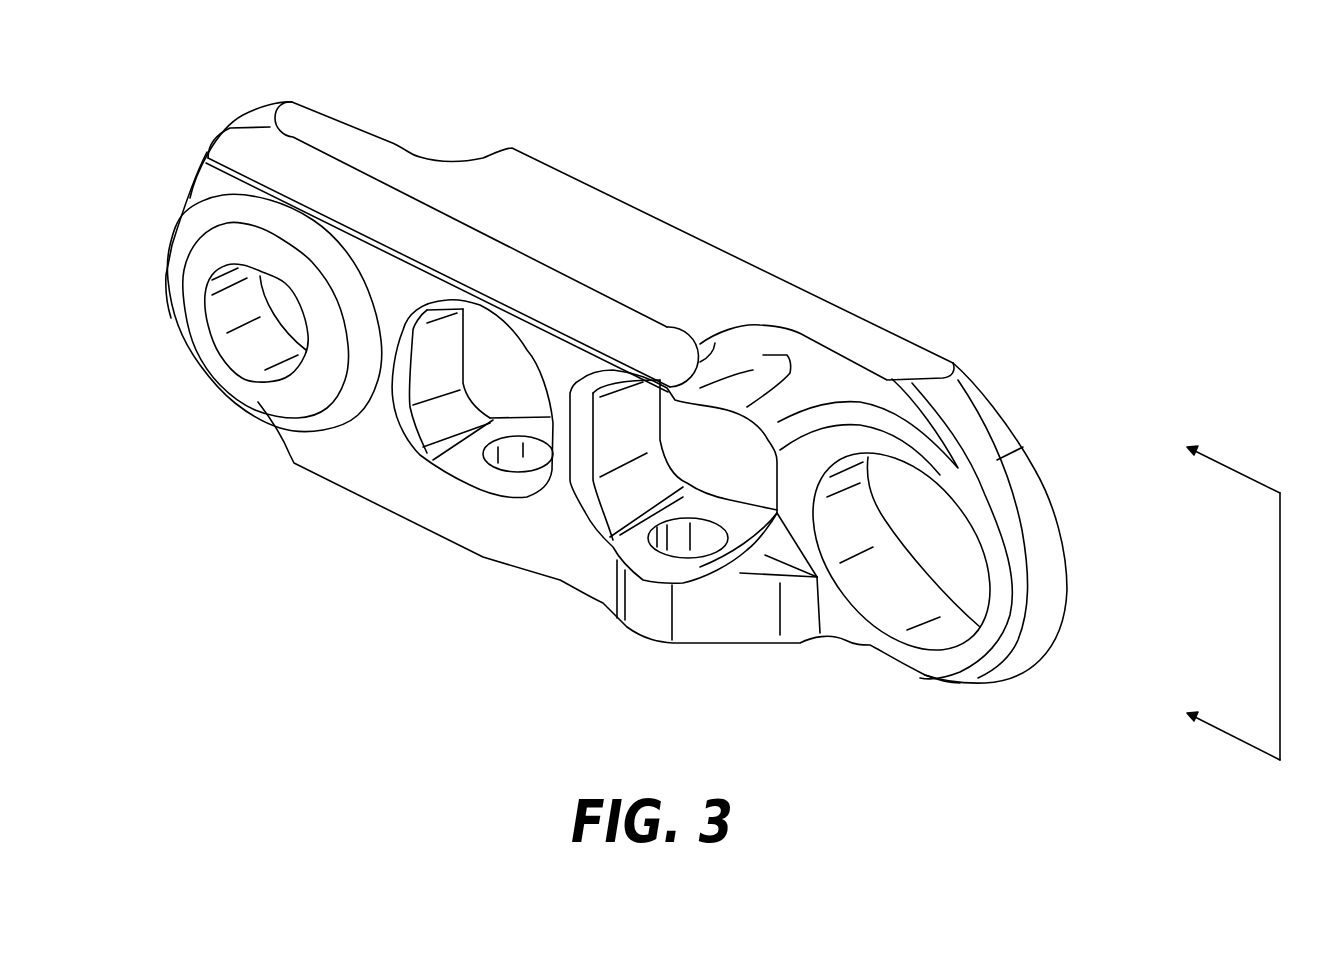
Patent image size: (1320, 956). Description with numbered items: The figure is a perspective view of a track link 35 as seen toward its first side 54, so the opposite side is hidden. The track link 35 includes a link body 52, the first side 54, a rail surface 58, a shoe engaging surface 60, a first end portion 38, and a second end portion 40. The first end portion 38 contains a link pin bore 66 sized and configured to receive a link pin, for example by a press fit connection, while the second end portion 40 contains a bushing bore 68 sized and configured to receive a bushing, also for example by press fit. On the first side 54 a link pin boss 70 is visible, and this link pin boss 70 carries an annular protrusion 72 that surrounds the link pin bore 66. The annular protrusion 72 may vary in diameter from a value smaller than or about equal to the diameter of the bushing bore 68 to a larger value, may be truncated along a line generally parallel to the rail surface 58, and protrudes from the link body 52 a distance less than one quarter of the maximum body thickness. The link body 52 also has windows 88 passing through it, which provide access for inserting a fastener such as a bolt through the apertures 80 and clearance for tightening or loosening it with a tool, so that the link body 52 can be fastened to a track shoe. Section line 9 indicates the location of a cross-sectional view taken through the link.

The section line 9- 9 is at (1245, 612).
The track link 35 is at (675, 141).
The first end portion 38 is at (197, 78).
The second end portion 40 is at (1087, 608).
The link body 52 is at (572, 555).
The first side 54 is at (414, 497).
The rail surface 58 is at (673, 230).
The shoe engaging surface 60 is at (480, 557).
The link pin bore 66 is at (247, 348).
The bushing bore 68 is at (887, 598).
The link pin boss 70 is at (283, 398).
The annular protrusion 72 is at (287, 253).
The aperture 80 is at (513, 438).
The window 88 is at (450, 358).